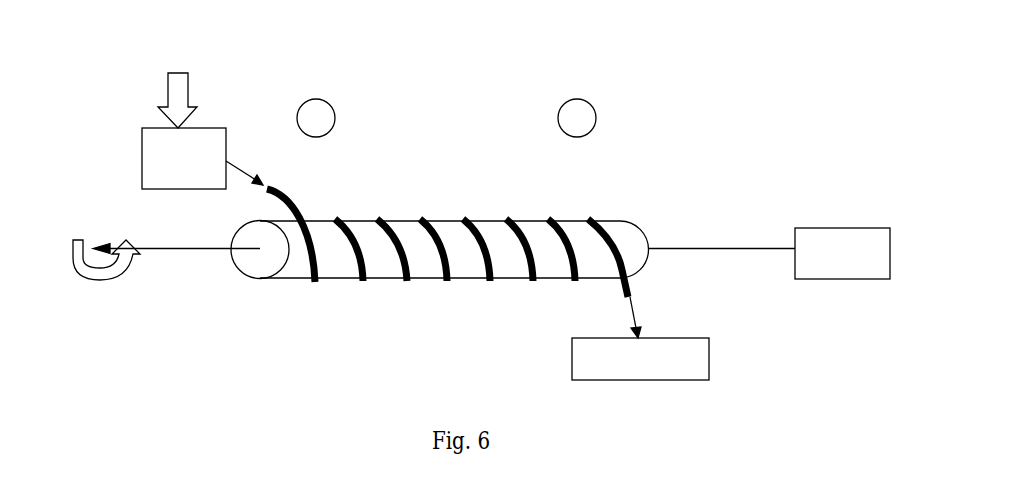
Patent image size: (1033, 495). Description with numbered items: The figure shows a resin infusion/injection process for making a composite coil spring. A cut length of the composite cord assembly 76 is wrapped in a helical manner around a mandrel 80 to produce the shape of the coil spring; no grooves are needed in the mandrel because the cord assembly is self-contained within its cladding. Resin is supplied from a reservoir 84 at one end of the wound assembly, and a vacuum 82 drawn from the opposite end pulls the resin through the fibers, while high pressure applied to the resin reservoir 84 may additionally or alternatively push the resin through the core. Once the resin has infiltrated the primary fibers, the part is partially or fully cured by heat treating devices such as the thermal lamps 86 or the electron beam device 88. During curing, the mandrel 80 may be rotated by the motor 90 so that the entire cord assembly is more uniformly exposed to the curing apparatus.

The composite cord assembly 76 is at (434, 209).
The mandrel 80 is at (260, 275).
The vacuum 82 is at (714, 352).
The resin reservoir 84 is at (142, 167).
The thermal lamps 86 is at (596, 107).
The electron beam device 88 is at (325, 102).
The motor 90 is at (847, 228).